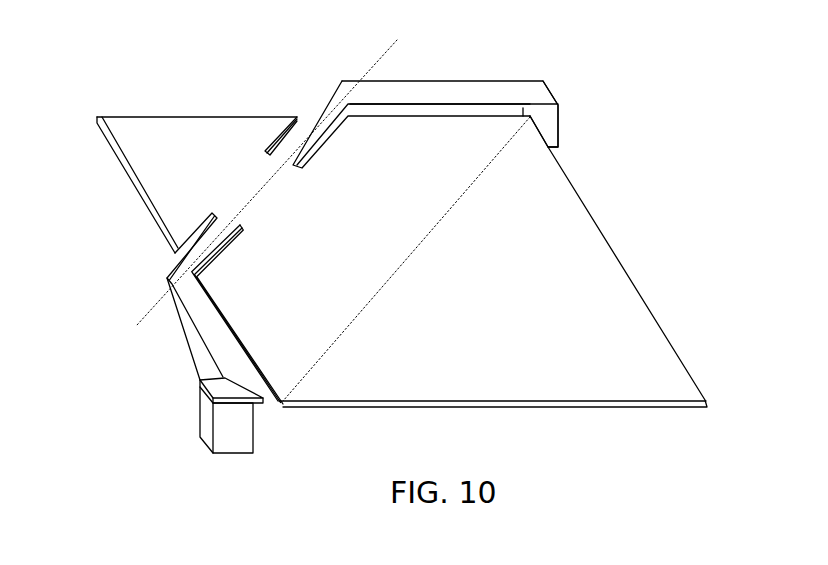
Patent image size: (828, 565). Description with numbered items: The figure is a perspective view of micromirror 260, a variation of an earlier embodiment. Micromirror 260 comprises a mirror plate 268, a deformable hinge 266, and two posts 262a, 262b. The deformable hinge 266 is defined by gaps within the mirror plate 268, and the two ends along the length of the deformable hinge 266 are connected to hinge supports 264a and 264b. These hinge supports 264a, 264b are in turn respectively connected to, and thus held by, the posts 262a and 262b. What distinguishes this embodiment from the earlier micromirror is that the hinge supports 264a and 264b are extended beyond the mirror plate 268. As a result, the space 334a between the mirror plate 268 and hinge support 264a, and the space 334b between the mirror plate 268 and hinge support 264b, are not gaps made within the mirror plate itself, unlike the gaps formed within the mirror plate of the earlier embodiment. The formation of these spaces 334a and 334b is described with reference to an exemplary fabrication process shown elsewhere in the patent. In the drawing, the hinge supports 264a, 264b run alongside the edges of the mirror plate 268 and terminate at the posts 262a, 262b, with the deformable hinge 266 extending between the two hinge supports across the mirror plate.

The micromirror 260 is at (204, 80).
The post 262a is at (547, 128).
The post 262b is at (243, 442).
The hinge support 264a is at (395, 88).
The hinge support 264b is at (215, 339).
The deformable hinge 266 is at (256, 189).
The mirror plate 268 is at (617, 280).
The space 334a is at (468, 117).
The space 334b is at (260, 349).